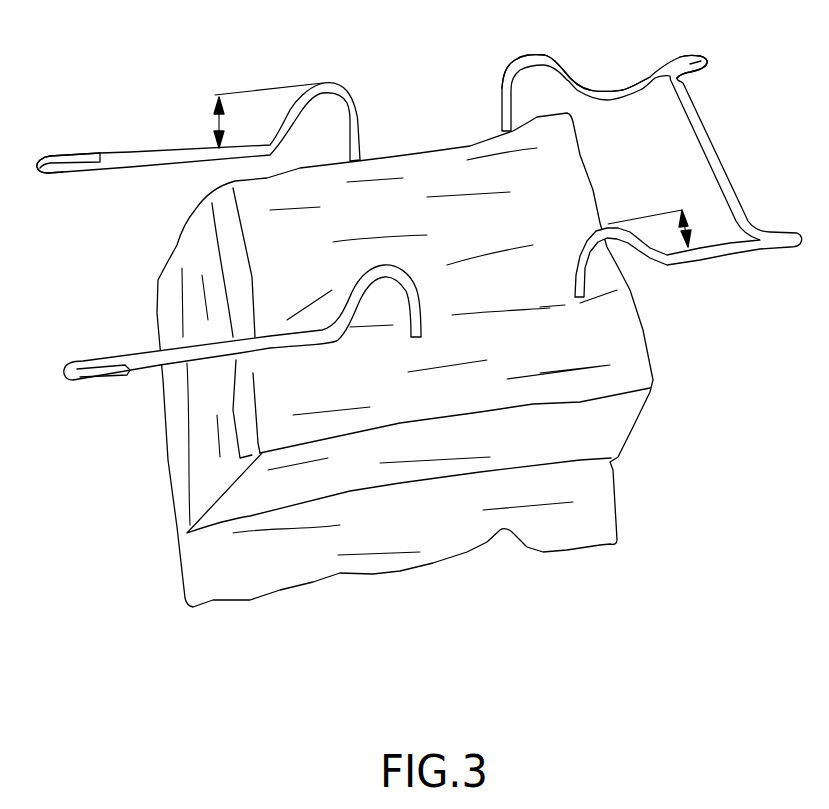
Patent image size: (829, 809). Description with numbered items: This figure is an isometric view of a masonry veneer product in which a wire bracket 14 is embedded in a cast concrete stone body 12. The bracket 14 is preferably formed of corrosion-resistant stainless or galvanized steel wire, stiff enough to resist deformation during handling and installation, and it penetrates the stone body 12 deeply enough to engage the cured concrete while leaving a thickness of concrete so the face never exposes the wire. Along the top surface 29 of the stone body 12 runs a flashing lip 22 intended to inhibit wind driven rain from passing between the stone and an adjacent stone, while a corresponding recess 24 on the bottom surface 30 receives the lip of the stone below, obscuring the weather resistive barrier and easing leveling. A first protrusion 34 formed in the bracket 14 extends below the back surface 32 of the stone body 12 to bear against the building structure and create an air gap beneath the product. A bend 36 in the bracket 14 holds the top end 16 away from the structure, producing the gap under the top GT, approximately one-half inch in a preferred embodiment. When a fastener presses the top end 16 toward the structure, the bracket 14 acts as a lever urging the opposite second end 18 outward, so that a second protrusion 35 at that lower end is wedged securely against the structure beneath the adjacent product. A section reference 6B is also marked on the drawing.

The stone body 12 is at (418, 165).
The back surface 32 is at (461, 175).
The recess 24 is at (182, 228).
The top surface 29 is at (653, 423).
The flashing lip 22 is at (618, 489).
The bottom surface 30 is at (132, 317).
The second protrusion 35 is at (323, 82).
The second end 18 is at (46, 156).
The bracket 14 is at (625, 76).
The first protrusion 34 is at (542, 54).
The bend 36 is at (578, 82).
The top end 16 is at (708, 60).
The section dimension 6B is at (218, 118).
The gap under the top GT is at (691, 215).